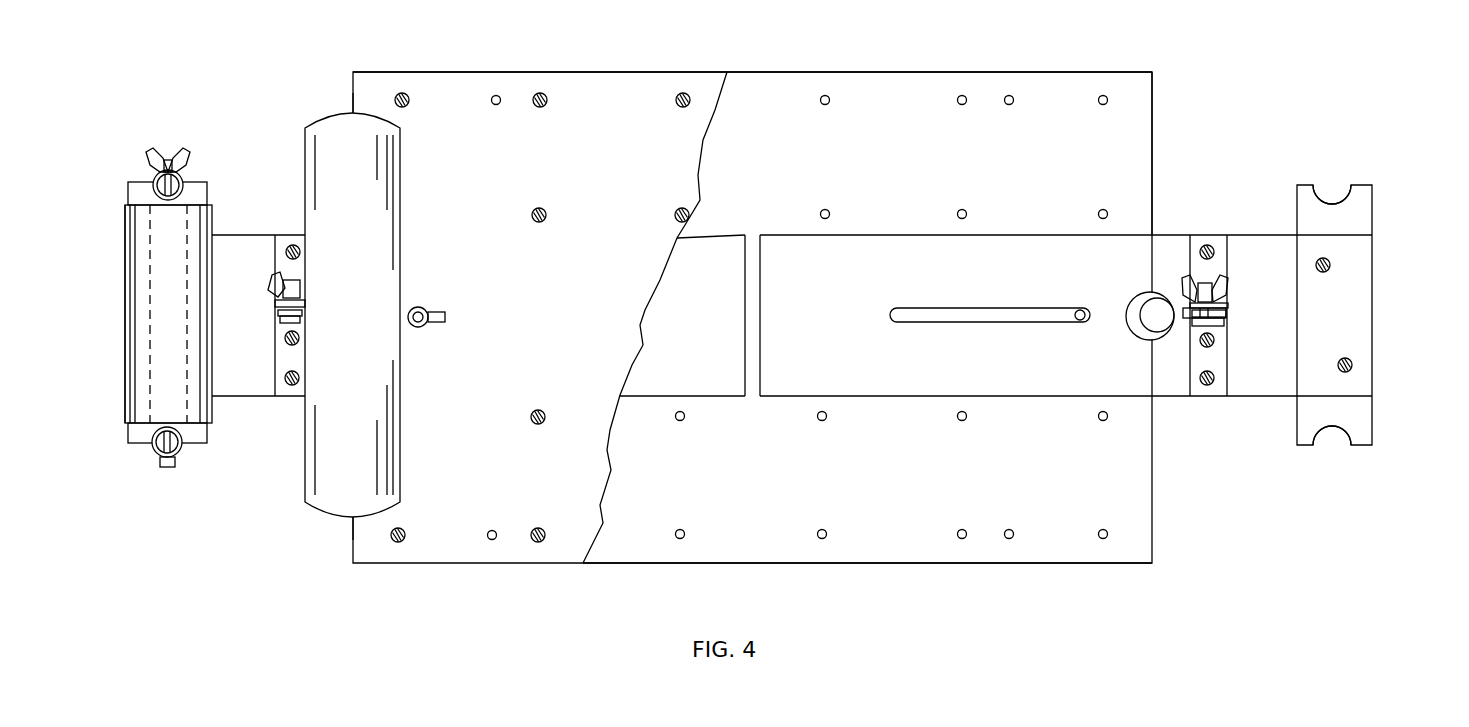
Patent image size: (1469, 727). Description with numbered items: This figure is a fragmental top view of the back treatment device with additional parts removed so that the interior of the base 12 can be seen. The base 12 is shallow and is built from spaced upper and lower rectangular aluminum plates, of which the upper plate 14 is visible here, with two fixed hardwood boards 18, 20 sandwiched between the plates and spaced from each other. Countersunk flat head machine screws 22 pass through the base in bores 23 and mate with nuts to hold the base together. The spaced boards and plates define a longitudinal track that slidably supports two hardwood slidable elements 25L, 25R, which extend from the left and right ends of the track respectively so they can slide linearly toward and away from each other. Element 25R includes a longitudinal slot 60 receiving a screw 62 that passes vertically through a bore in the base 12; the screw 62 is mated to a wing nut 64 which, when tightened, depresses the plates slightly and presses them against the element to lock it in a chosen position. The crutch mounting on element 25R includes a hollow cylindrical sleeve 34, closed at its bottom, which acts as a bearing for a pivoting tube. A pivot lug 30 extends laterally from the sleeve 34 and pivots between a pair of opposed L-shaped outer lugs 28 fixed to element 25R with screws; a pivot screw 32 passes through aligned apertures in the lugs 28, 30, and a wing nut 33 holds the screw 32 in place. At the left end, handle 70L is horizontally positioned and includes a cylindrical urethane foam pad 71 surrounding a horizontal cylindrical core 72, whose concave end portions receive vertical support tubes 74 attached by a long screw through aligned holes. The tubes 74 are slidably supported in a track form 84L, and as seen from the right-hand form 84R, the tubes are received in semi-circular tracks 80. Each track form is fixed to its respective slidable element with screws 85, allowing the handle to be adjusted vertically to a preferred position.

The base 12 is at (633, 62).
The upper rectangular aluminum plate 14 is at (447, 82).
The fixed hardwood board 18 is at (893, 83).
The fixed hardwood board 20 is at (892, 552).
The countersunk flat head machine screws 22 is at (676, 106).
The bores 23 is at (820, 105).
The slidable element 25L is at (707, 235).
The slidable element 25R is at (1020, 235).
The L-shaped outer lugs 28 is at (1228, 252).
The pivot lug 30 is at (1228, 315).
The pivot screw 32 is at (295, 280).
The wing nut 33 is at (1225, 285).
The hollow cylindrical sleeve 34 is at (1124, 300).
The longitudinal slot 60 is at (985, 308).
The screw 62 is at (1080, 320).
The wing nut 64 is at (430, 308).
The handle 70L is at (123, 278).
The cylindrical urethane foam pad 71 is at (123, 390).
The horizontal cylindrical core 72 is at (148, 350).
The vertical support tubes 74 is at (185, 178).
The semi-circular tracks 80 is at (1335, 200).
The track form 84L is at (138, 182).
The track form 84R is at (1372, 213).
The screws 85 is at (1325, 272).